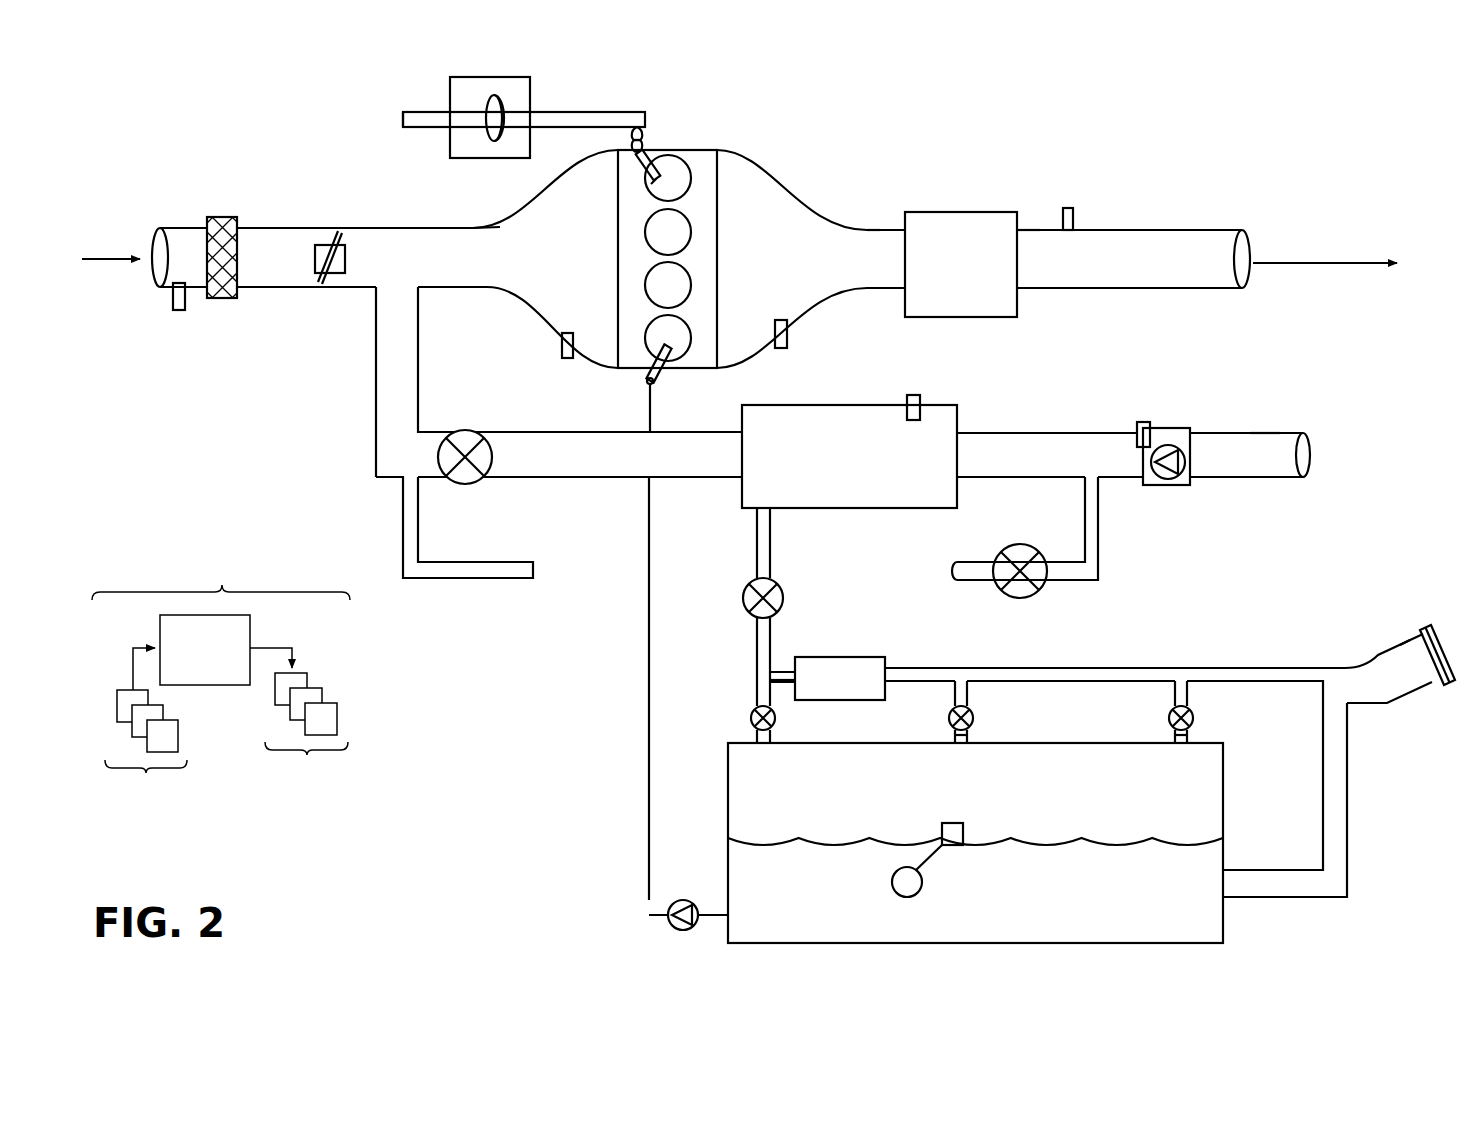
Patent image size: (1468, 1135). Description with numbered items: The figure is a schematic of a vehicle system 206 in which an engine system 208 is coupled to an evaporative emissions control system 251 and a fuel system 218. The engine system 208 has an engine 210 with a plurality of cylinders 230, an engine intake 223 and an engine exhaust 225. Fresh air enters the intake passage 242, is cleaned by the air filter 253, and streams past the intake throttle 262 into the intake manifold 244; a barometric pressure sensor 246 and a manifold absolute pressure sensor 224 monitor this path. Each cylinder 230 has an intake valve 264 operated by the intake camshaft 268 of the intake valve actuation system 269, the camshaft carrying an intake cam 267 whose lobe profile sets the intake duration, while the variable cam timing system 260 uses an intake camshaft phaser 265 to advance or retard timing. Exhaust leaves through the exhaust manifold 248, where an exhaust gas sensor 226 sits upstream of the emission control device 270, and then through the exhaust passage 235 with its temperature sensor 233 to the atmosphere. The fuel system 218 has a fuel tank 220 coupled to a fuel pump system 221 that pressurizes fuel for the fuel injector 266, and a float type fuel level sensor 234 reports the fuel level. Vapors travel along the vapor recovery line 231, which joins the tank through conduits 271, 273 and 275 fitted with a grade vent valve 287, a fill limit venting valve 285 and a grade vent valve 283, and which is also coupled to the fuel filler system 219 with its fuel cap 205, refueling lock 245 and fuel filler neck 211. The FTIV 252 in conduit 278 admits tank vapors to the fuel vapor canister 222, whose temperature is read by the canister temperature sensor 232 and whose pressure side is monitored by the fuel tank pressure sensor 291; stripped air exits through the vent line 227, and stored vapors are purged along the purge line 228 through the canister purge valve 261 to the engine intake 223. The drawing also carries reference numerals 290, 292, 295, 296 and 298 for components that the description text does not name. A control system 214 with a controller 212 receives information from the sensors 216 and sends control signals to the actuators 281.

The fuel cap 205 is at (1433, 626).
The vehicle system 206 is at (178, 158).
The engine system 208 is at (1030, 152).
The engine 210 is at (720, 298).
The fuel filler pipe or neck 211 is at (1347, 785).
The controller 212 is at (191, 659).
The control system 214 is at (221, 572).
The sensors 216 is at (146, 754).
The fuel system 218 is at (1365, 890).
The fuel filler system 219 is at (1400, 630).
The fuel tank 220 is at (1223, 800).
The fuel pump system 221 is at (680, 900).
The fuel vapor canister 222 is at (912, 508).
The engine intake 223 is at (468, 206).
The manifold absolute pressure sensor 224 is at (562, 340).
The engine exhaust 225 is at (893, 163).
The exhaust gas sensor 226 is at (788, 330).
The vent line 227 is at (1029, 466).
The purge line 228 is at (556, 469).
The cylinders 230 is at (698, 178).
The vapor recovery line 231 is at (1243, 668).
The canister temperature sensor 232 is at (912, 395).
The temperature sensor 233 is at (1063, 218).
The fuel level sensor 234 is at (960, 823).
The exhaust passage 235 is at (1195, 230).
The intake passage 242 is at (290, 290).
The intake manifold 244 is at (548, 271).
The refueling lock 245 is at (1433, 688).
The barometric pressure sensor 246 is at (178, 311).
The exhaust manifold 248 is at (776, 271).
The evaporative emissions control system 251 is at (1253, 400).
The fuel tank isolation valve (FTIV) 252 is at (748, 598).
The air filter 253 is at (222, 217).
The variable cam timing system 260 is at (530, 90).
The canister purge valve 261 is at (468, 432).
The throttle 262 is at (346, 262).
The intake valve 264 is at (640, 160).
The intake camshaft phaser 265 is at (496, 141).
The fuel injector 266 is at (656, 380).
The intake cam 267 is at (645, 136).
The intake camshaft 268 is at (598, 112).
The intake valve actuation system 269 is at (412, 104).
The emission control device 270 is at (945, 212).
The conduit 271 is at (776, 698).
The conduit 273 is at (955, 691).
The conduit 275 is at (1172, 692).
The conduit 278 is at (772, 560).
The actuators 281 is at (307, 738).
The grade vent valve 283 is at (1195, 720).
The fill limit venting valve 285 is at (975, 720).
The grade vent valve 287 is at (752, 715).
The valve 290 is at (1025, 545).
The fuel tank pressure sensor 291 is at (855, 657).
The conduit 292 is at (505, 562).
The pump housing 295 is at (1170, 428).
The pressure sensor 296 is at (1142, 422).
The pump 298 is at (1166, 485).